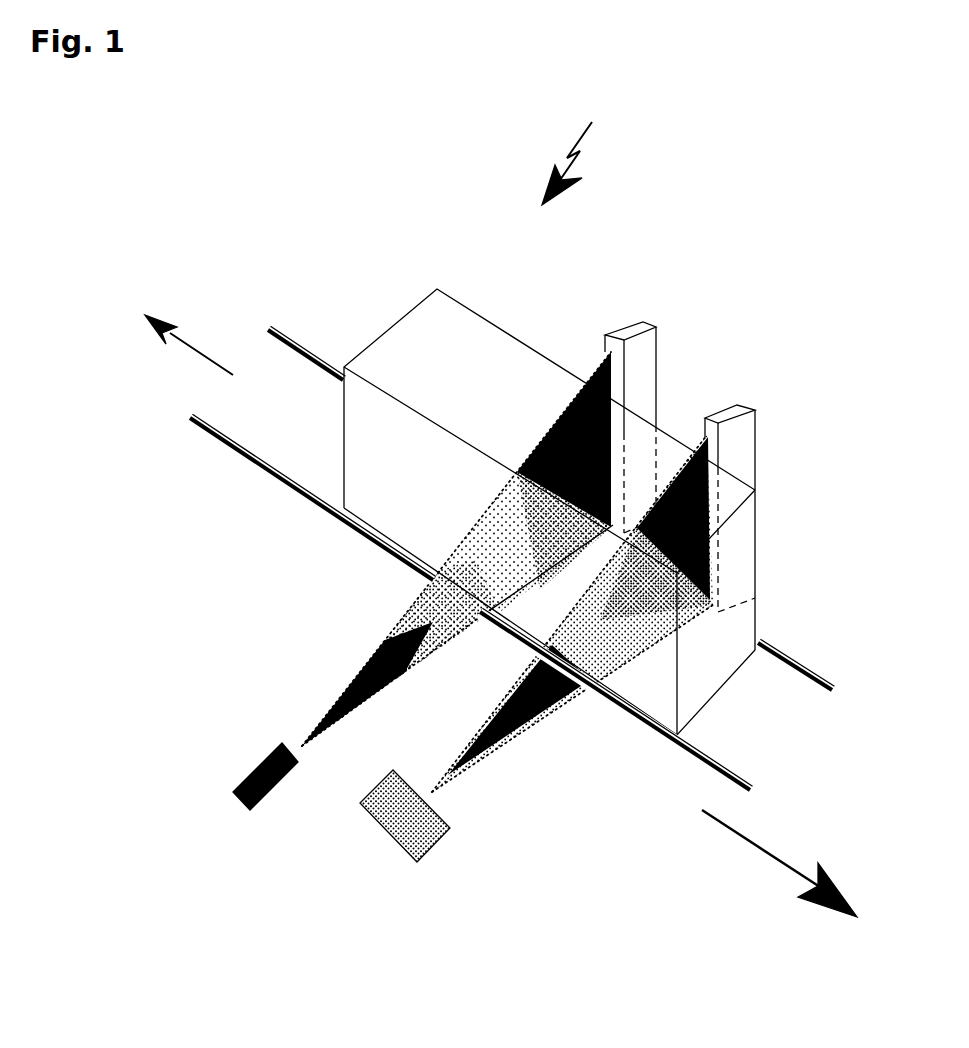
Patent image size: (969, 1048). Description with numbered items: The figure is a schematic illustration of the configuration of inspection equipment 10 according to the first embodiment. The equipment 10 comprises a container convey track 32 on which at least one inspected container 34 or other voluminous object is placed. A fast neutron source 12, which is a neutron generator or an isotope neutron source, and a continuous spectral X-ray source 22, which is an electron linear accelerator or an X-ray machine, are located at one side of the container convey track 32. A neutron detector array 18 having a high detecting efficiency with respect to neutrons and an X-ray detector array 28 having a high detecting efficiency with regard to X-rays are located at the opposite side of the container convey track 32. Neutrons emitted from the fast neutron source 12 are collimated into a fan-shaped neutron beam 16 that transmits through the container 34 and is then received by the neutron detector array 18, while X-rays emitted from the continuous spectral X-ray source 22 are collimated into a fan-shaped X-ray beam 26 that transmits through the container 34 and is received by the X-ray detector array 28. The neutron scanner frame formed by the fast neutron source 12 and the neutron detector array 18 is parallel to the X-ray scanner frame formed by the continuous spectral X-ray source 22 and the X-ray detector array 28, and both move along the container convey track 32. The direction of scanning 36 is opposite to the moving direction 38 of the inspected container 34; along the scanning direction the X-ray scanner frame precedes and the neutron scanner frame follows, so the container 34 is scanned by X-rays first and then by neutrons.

The equipment 10 is at (580, 149).
The fast neutron source 12 is at (255, 768).
The fan-shaped neutron beam 16 is at (390, 638).
The neutron detector array 18 is at (642, 370).
The continuous spectral X-ray source 22 is at (443, 837).
The fan-shaped X-ray beam 26 is at (487, 755).
The X-ray detector array 28 is at (745, 442).
The container convey track 32 is at (248, 456).
The inspected container 34 is at (407, 333).
The direction of scanning 36 is at (777, 881).
The moving direction 38 is at (190, 343).